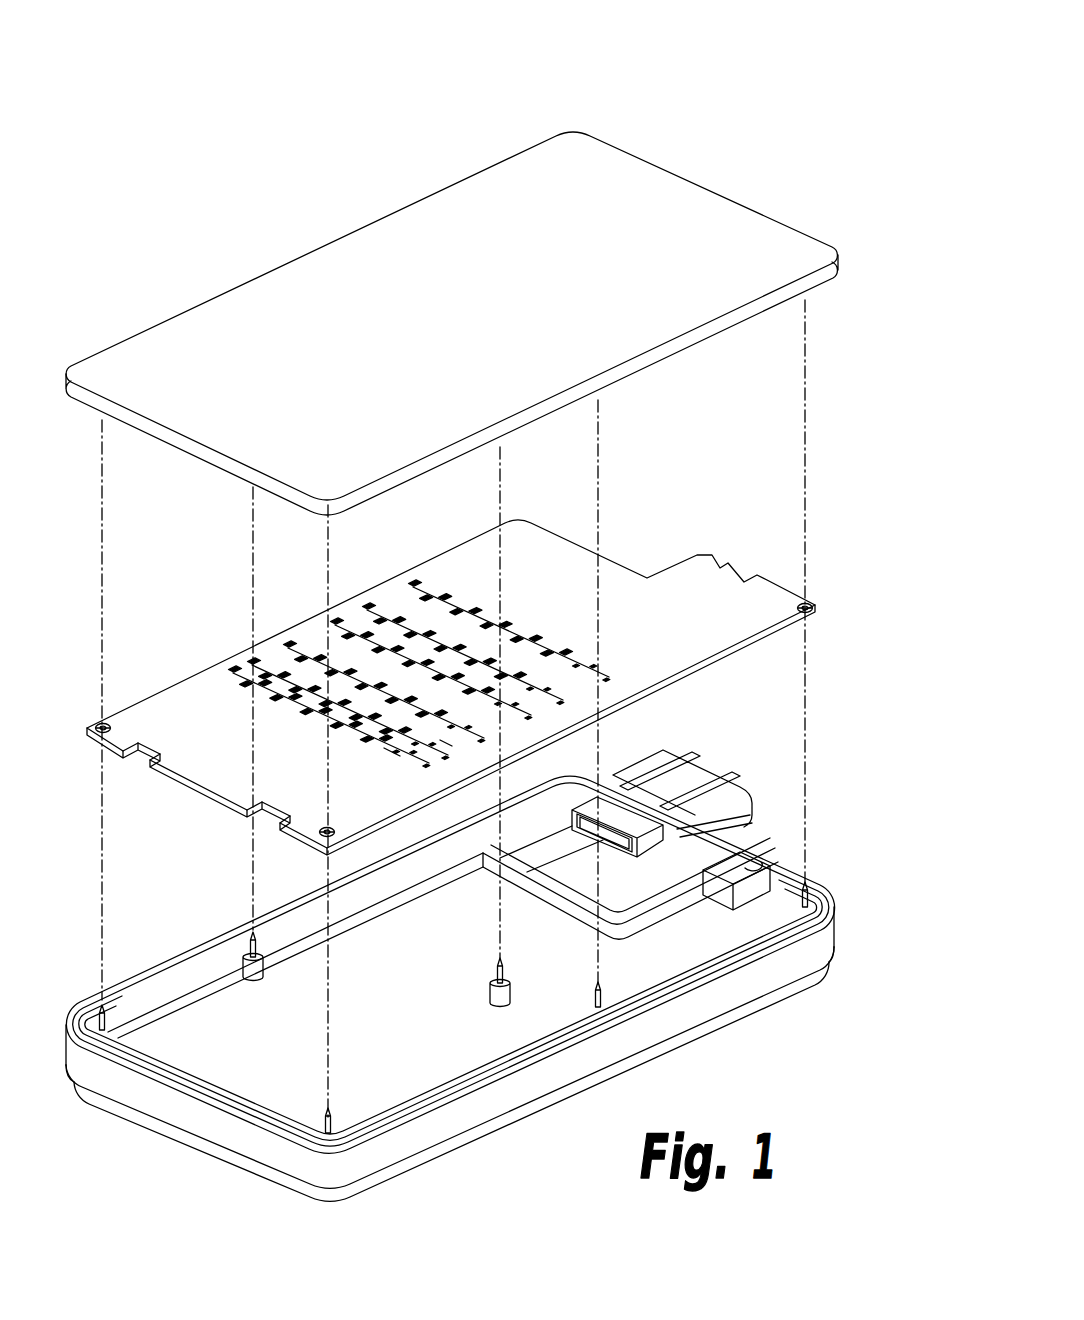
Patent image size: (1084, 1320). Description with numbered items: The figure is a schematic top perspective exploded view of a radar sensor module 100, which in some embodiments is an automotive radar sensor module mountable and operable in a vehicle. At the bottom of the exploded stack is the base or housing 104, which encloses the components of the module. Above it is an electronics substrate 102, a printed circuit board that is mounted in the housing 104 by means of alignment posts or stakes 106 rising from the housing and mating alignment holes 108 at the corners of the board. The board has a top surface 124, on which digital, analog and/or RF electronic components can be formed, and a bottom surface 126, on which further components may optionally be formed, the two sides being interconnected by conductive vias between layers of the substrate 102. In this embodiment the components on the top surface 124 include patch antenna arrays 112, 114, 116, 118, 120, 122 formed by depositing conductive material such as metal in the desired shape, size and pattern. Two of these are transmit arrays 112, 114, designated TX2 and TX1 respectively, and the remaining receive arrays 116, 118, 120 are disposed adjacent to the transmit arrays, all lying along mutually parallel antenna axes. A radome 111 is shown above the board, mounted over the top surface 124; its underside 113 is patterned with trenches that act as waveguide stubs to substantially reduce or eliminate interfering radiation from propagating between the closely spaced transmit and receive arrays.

The radar sensor module 100 is at (500, 617).
The electronics substrate 102 is at (487, 674).
The housing 104 is at (845, 922).
The alignment posts 106 is at (250, 942).
The alignment holes 108 is at (108, 723).
The cover 111 is at (320, 295).
The underside of radome 113 is at (652, 366).
The transmit array TX2 112 is at (232, 672).
The transmit array TX1 114 is at (248, 666).
The receive array 116 is at (288, 647).
The receive array 118 is at (337, 622).
The receive array 120 is at (370, 610).
The patch antenna array 122 is at (415, 586).
The top surface of PCB 124 is at (667, 598).
The bottom surface of PCB 126 is at (718, 668).
The transmit array TX1 is at (441, 740).
The transmit array TX2 is at (385, 748).